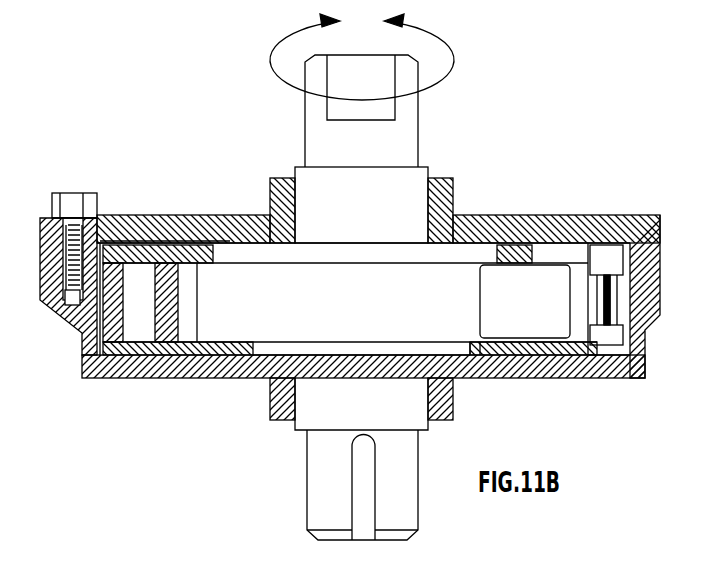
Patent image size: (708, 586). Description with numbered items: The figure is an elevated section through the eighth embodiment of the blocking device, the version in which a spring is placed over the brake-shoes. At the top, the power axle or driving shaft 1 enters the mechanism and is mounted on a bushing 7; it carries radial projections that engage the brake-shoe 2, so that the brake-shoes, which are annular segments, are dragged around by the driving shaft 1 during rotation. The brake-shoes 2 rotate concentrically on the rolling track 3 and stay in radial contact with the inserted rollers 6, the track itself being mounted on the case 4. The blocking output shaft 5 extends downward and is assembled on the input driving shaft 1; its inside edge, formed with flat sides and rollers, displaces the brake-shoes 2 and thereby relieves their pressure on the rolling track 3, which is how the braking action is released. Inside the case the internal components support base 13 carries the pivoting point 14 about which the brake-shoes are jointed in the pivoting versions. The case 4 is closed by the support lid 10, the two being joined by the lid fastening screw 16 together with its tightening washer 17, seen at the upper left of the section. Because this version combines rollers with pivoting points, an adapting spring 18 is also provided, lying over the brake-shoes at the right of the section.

The power axle 1 is at (402, 122).
The brake-shoe 2 is at (82, 353).
The rolling track 3 is at (605, 376).
The case 4 is at (80, 325).
The blocking output shaft 5 is at (320, 465).
The rollers 6 is at (515, 280).
The bushings 7 is at (453, 402).
The support lid 10 is at (505, 215).
The internal components support base 13 is at (163, 352).
The pivoting point 14 is at (137, 325).
The lid fastening screw 16 is at (60, 200).
The tightening washer 17 is at (62, 218).
The adapting spring 18 is at (610, 300).